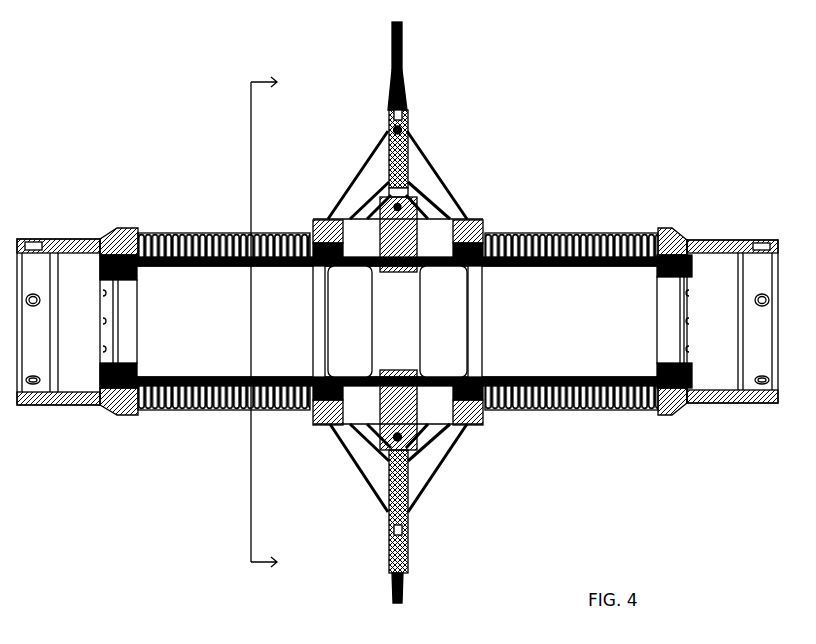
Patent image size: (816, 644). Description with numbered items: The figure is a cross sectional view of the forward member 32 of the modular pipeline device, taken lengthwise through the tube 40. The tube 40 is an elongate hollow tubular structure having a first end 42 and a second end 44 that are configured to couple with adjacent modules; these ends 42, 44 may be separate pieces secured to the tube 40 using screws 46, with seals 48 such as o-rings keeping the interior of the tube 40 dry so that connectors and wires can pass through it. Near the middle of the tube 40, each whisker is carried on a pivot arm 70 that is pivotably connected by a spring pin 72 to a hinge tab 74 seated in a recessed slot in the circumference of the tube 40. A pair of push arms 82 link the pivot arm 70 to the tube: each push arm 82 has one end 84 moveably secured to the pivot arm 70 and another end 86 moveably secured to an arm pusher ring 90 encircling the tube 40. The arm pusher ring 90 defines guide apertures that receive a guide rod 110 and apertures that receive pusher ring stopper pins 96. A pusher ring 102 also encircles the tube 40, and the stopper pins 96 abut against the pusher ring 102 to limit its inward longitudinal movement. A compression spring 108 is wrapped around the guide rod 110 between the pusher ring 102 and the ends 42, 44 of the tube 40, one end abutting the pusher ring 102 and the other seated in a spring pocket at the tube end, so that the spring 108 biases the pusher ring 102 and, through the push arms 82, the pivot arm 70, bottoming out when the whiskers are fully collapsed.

The coupling assembly 32 is at (597, 106).
The tube 40 is at (215, 290).
The first end 42 is at (68, 403).
The second end 44 is at (710, 397).
The screws 46 is at (112, 408).
The seals 48 is at (683, 235).
The pivot arm 70 is at (407, 143).
The spring pin 72 is at (407, 190).
The hinge tab 74 is at (433, 203).
The push arms 82 is at (433, 458).
The one end 84 is at (412, 488).
The another end 86 is at (457, 428).
The arm pusher ring 90 is at (333, 430).
The pusher ring stopper pin 96 is at (316, 223).
The pusher ring 102 is at (480, 415).
The compression spring 108 is at (588, 233).
The guide rod 110 is at (483, 223).